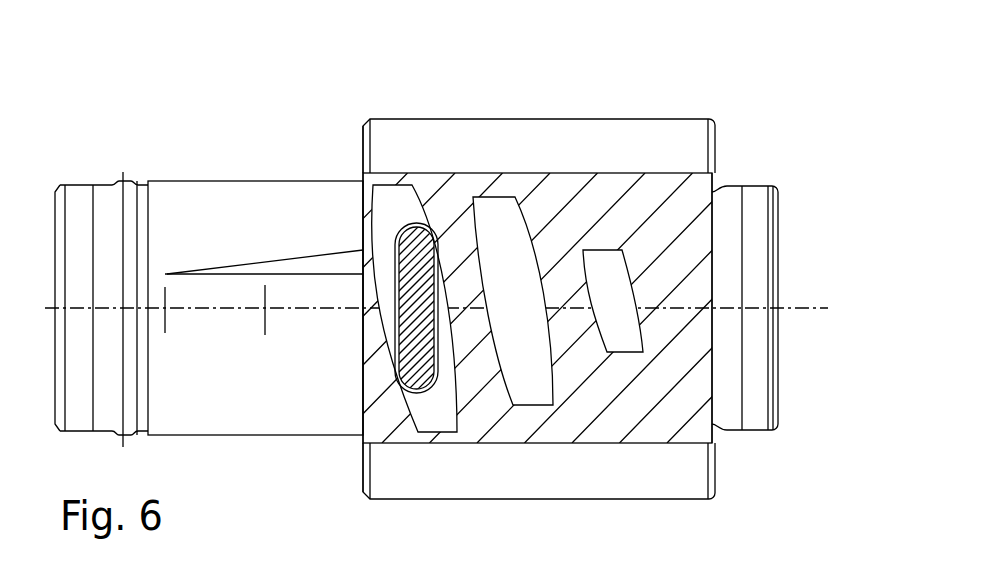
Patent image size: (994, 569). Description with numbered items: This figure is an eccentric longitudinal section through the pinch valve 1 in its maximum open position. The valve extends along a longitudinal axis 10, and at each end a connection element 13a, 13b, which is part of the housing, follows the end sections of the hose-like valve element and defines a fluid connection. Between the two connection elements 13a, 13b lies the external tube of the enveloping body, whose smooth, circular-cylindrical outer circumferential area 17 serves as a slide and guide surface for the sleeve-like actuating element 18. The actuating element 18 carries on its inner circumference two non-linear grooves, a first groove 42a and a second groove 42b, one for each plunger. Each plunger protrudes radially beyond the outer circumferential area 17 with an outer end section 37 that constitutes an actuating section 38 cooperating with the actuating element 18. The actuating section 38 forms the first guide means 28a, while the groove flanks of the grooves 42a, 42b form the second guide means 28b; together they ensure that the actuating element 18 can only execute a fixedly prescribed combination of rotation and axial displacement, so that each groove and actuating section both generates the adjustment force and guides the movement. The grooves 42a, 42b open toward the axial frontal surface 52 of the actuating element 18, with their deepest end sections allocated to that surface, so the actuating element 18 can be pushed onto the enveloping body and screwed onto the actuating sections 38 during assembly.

The pinch valve 1 is at (758, 120).
The longitudinal axis 10 is at (816, 305).
The connection element 13a is at (82, 197).
The connection element 13b is at (755, 417).
The outer circumferential area 17 is at (256, 414).
The actuating element 18 is at (663, 133).
The axial frontal surface 52 is at (352, 147).
The first guide means 28a is at (457, 249).
The outer end section 37 is at (457, 249).
The actuating section 38 is at (439, 240).
The second guide means 28b is at (382, 226).
The first groove 42a is at (387, 202).
The second groove 42b is at (498, 212).